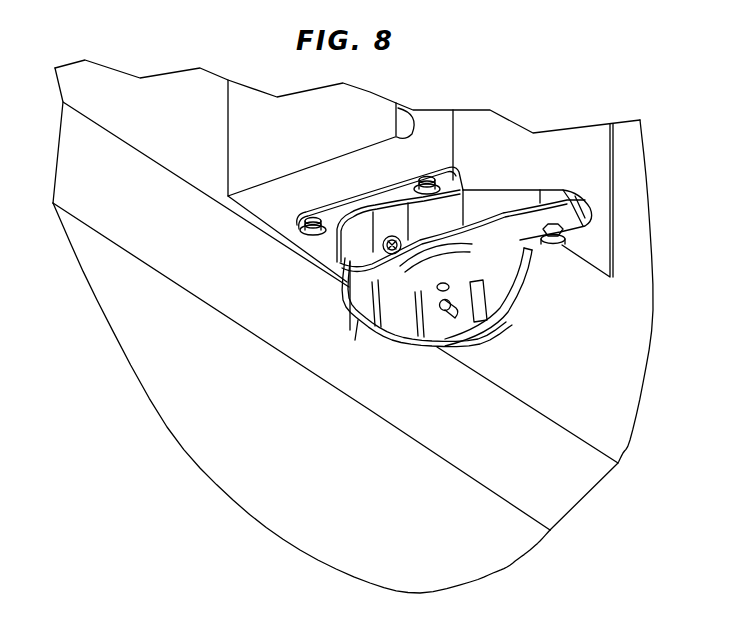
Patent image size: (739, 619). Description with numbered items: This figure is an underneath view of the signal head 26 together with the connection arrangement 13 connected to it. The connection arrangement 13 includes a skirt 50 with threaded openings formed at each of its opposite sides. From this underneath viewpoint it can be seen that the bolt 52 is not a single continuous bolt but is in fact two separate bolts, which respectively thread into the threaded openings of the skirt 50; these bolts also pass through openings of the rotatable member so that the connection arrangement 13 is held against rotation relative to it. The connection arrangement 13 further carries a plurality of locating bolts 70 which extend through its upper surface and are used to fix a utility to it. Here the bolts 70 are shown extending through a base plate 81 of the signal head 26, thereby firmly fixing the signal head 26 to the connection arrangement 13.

The signal head 26 is at (151, 220).
The connection arrangement 13 is at (495, 200).
The locating bolts 70 is at (418, 180).
The bolt 52 is at (358, 268).
The skirt 50 is at (488, 322).
The base plate 81 is at (550, 300).